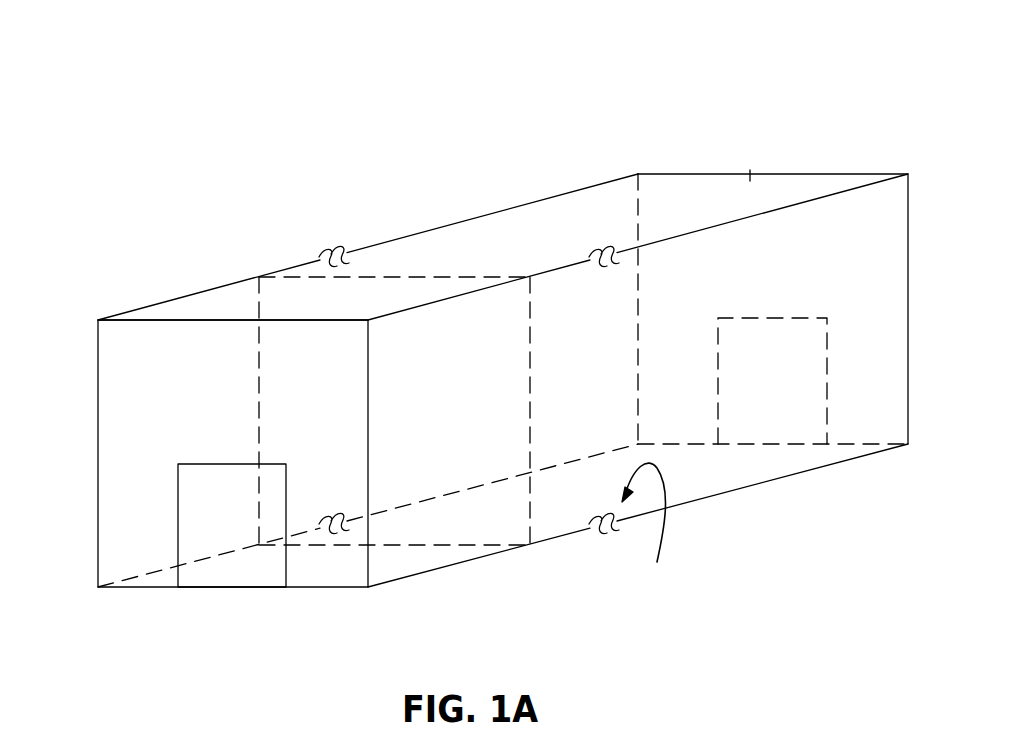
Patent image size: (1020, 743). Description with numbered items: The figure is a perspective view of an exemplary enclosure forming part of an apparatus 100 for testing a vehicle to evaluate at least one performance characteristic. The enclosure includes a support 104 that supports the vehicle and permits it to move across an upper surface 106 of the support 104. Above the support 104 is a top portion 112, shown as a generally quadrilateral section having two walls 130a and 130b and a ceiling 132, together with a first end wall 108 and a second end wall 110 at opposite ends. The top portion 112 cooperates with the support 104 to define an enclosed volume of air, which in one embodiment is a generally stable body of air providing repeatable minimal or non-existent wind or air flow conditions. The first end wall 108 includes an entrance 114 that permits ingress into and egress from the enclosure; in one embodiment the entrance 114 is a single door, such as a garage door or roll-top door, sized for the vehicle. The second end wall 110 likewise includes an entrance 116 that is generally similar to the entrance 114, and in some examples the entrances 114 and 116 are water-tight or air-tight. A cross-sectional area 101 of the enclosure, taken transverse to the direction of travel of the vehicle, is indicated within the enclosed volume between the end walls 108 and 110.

The apparatus 100 is at (460, 344).
The cross-sectional area 101 is at (258, 343).
The support 104 is at (652, 530).
The upper surface 106 is at (406, 550).
The first end wall 108 is at (134, 503).
The second end wall 110 is at (749, 180).
The top portion 112 is at (460, 185).
The entrance 114 is at (228, 564).
The entrance 116 is at (827, 363).
The wall 130a is at (198, 379).
The wall 130b is at (717, 468).
The ceiling 132 is at (390, 260).